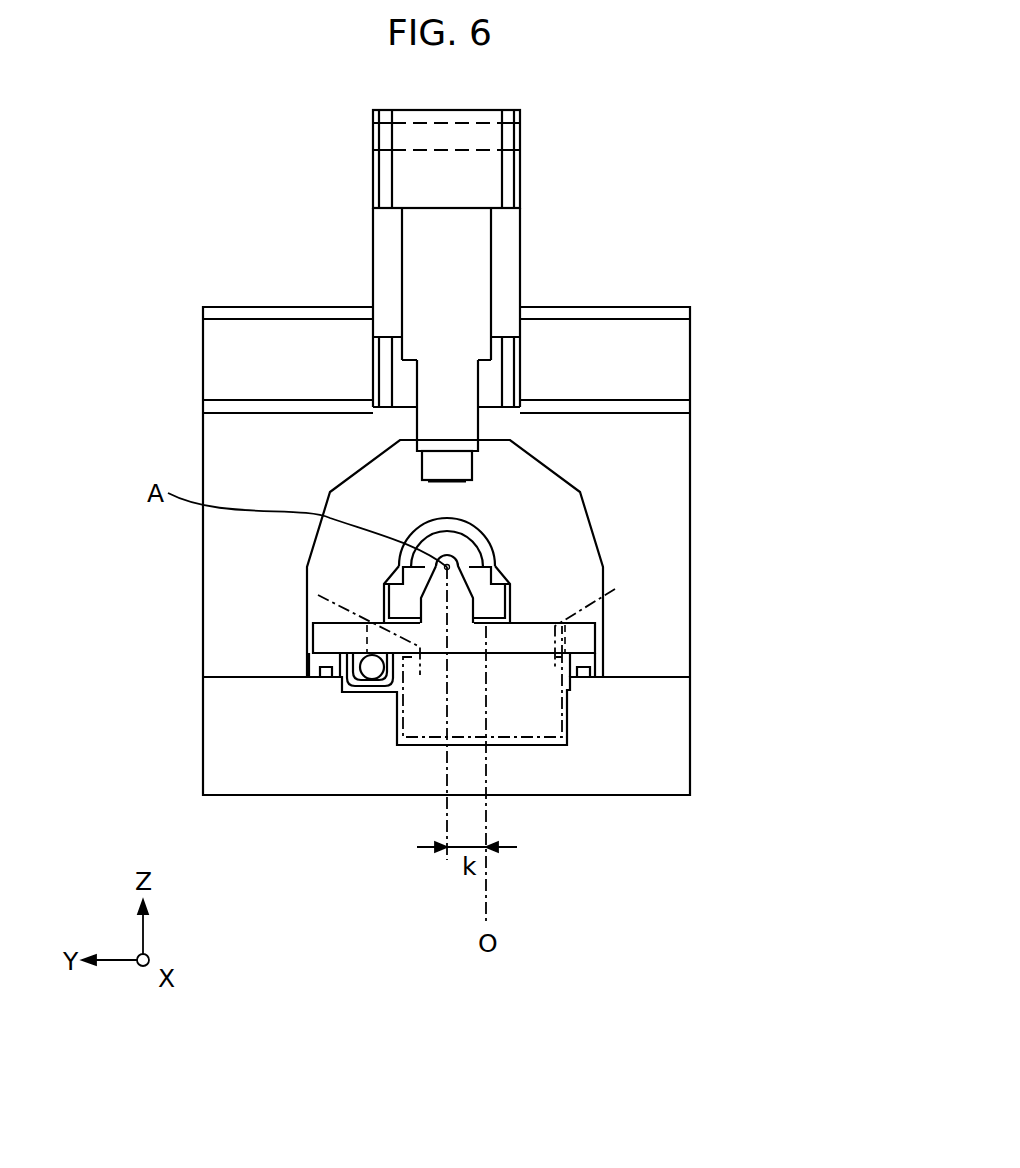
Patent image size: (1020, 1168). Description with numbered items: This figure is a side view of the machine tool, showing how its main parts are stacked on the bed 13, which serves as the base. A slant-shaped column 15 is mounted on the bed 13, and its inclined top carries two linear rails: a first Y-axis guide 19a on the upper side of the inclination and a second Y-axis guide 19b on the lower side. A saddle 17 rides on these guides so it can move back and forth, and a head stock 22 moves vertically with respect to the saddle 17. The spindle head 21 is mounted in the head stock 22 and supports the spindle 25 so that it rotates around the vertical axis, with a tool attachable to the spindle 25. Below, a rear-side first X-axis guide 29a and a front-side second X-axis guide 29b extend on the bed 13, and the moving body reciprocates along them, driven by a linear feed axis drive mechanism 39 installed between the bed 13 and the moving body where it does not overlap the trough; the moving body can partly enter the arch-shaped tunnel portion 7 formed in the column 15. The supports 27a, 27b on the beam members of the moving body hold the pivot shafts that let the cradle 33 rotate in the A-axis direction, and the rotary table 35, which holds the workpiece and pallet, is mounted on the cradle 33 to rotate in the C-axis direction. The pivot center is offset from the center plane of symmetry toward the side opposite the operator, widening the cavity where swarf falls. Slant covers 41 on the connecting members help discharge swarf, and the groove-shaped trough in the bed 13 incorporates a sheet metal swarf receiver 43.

The arch-shaped tunnel portion 7 is at (367, 462).
The bed 13 is at (650, 762).
The column 15 is at (233, 597).
The saddle 17 is at (472, 172).
The first Y-axis guide 19a is at (628, 307).
The second Y-axis guide 19b is at (628, 398).
The spindle head 21 is at (452, 433).
The head stock 22 is at (472, 255).
The spindle 25 is at (452, 471).
The support 27a is at (460, 608).
The support 27b is at (465, 530).
The first X-axis guide 29a is at (318, 668).
The second X-axis guide 29b is at (593, 673).
The cradle 33 is at (403, 601).
The rotary table 35 is at (482, 573).
The linear feed axis drive mechanism 39 is at (373, 672).
The slant cover 41 is at (615, 589).
The sheet metal swarf receiver 43 is at (520, 748).